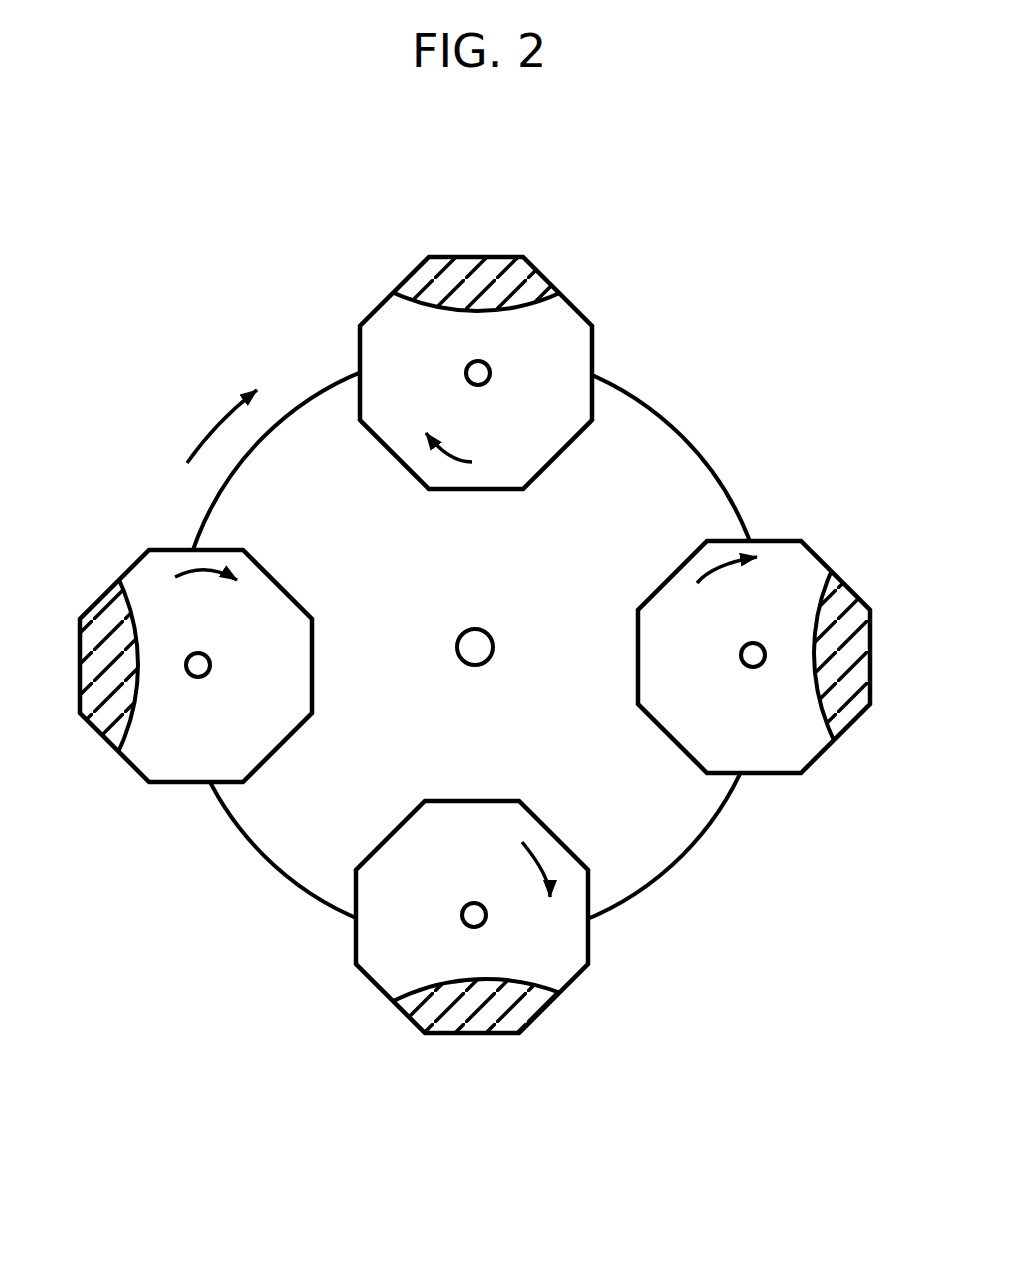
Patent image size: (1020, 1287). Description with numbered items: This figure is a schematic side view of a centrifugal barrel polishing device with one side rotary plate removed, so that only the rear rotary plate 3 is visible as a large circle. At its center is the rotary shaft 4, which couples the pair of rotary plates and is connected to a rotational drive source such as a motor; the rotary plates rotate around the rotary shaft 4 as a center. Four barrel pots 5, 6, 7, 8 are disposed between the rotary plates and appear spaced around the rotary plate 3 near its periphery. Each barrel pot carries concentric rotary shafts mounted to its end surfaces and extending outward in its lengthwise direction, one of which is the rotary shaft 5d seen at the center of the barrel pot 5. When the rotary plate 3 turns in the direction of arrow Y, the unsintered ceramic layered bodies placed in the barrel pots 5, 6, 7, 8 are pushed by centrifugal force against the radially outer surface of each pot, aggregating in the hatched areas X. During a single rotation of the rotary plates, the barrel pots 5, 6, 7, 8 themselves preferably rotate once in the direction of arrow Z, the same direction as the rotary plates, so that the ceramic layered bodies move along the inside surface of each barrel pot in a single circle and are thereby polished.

The rotary plate 3 is at (652, 460).
The rotary shaft 4 is at (493, 660).
The barrel pot 5 is at (582, 307).
The rotary shaft 5d is at (490, 370).
The barrel pot 6 is at (793, 587).
The barrel pot 7 is at (578, 977).
The barrel pot 8 is at (170, 783).
The area X is at (485, 287).
The arrow Y is at (200, 440).
The arrow Z is at (443, 450).